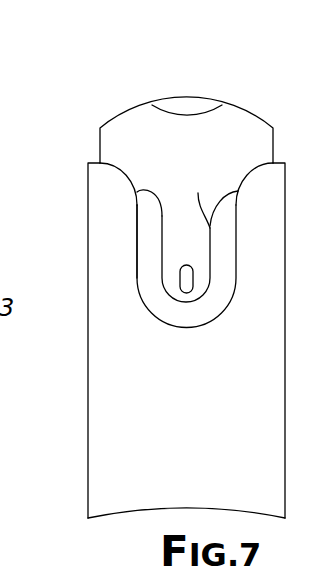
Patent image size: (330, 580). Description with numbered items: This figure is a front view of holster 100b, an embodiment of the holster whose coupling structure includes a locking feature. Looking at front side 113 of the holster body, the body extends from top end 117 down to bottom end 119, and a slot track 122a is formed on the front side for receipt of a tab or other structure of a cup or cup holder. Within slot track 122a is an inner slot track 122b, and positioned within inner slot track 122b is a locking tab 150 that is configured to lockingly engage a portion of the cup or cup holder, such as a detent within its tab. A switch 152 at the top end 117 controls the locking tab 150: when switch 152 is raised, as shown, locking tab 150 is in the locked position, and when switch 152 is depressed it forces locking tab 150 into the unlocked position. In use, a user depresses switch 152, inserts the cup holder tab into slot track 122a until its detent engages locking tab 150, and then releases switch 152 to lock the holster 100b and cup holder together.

The holster 100b is at (110, 97).
The top end 117 is at (228, 98).
The switch 152 is at (180, 97).
The inner slot track 122b is at (198, 193).
The front side 113 is at (111, 201).
The locking tab 150 is at (181, 265).
The slot track 122a is at (137, 258).
The bottom end 119 is at (150, 511).